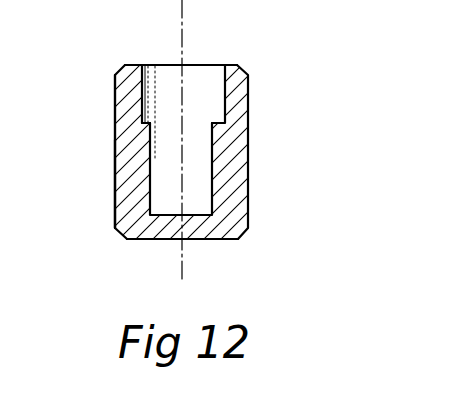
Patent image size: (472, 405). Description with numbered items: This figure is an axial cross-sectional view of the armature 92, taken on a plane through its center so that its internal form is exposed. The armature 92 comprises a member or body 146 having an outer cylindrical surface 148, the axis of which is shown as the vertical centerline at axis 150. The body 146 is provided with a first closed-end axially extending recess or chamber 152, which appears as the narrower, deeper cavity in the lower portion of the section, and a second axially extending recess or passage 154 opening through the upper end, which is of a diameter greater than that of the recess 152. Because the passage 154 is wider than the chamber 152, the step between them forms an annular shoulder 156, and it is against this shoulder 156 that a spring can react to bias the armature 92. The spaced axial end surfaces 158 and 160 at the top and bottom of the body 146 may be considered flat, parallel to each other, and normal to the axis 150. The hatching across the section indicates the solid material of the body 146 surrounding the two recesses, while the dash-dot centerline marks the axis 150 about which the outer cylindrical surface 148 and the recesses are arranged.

The armature 92 is at (288, 149).
The body 146 is at (128, 175).
The outer cylindrical surface 148 is at (115, 202).
The axis 150 is at (182, 253).
The recess or chamber 152 is at (212, 187).
The recess or passage 154 is at (212, 92).
The annular shoulder 156 is at (147, 121).
The axial end surface 158 is at (137, 64).
The axial end surface 160 is at (150, 242).